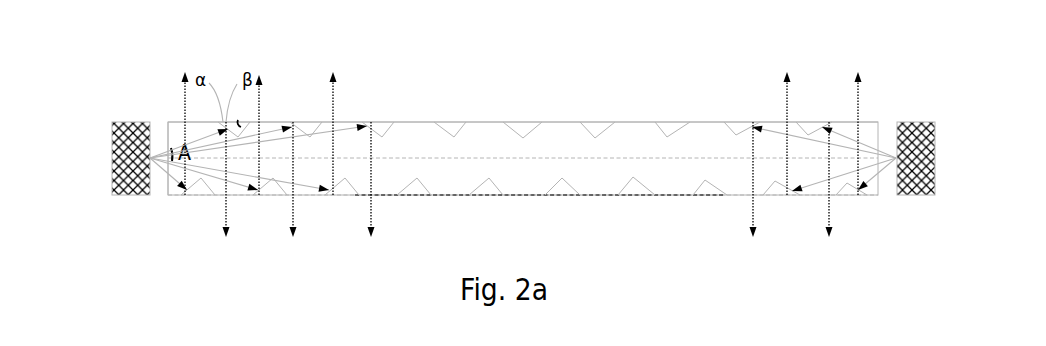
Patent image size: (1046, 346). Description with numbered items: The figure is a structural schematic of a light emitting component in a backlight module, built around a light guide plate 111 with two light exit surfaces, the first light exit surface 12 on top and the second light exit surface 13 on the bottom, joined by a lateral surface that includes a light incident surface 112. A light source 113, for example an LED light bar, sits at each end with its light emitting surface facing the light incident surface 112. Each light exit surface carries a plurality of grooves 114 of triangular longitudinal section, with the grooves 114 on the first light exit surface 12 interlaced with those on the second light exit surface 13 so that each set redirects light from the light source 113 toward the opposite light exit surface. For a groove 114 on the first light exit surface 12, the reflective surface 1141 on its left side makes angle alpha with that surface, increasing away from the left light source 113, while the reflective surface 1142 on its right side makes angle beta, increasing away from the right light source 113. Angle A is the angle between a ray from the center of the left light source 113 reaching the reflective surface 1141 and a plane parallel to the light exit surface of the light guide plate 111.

The light guide plate 111 is at (523, 120).
The light incident surface 112 is at (105, 129).
The light source 113 is at (96, 148).
The groove 114 is at (524, 120).
The reflective surface on the left side of the groove 1141 is at (192, 179).
The reflective surface on the right side of the groove 1142 is at (299, 179).
The first light exit surface 12 is at (564, 105).
The second light exit surface 13 is at (564, 216).